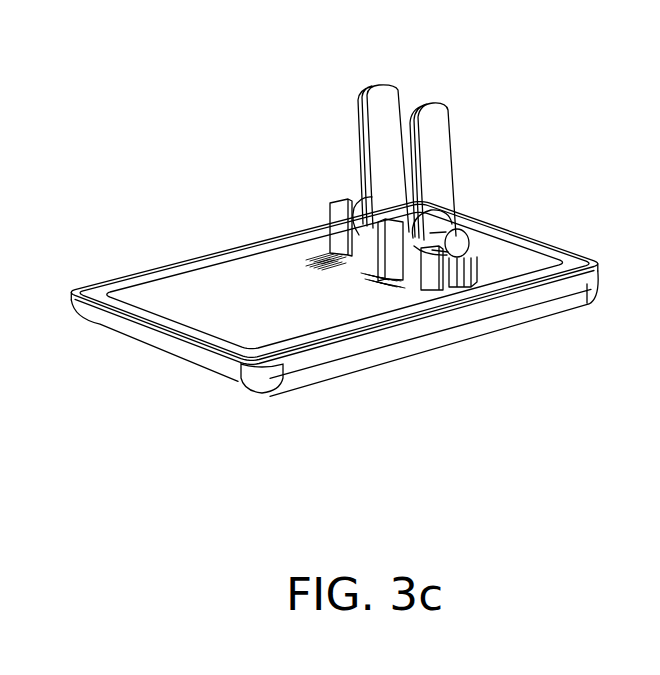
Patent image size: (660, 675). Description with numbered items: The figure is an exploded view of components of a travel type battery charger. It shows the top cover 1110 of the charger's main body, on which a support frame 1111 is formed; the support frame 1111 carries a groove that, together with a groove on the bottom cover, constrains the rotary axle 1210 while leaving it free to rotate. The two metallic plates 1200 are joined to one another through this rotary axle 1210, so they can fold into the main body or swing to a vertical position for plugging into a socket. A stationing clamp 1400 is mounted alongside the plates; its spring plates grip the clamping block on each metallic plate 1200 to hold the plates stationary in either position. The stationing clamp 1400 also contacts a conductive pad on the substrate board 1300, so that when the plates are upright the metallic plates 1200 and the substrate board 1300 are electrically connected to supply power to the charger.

The top cover 1110 is at (148, 347).
The support frame 1111 is at (380, 283).
The metallic plates 1200 is at (433, 146).
The rotary axle 1210 is at (452, 234).
The substrate board 1300 is at (180, 297).
The stationing clamp 1400 is at (388, 238).